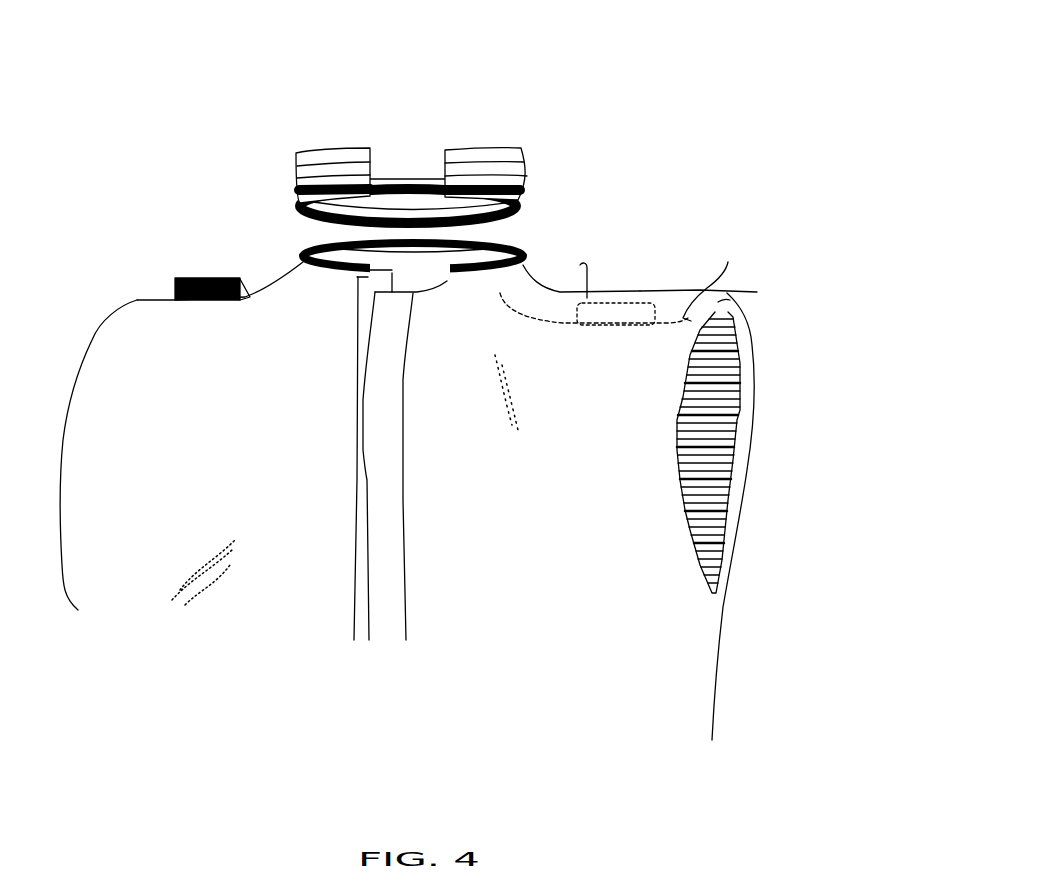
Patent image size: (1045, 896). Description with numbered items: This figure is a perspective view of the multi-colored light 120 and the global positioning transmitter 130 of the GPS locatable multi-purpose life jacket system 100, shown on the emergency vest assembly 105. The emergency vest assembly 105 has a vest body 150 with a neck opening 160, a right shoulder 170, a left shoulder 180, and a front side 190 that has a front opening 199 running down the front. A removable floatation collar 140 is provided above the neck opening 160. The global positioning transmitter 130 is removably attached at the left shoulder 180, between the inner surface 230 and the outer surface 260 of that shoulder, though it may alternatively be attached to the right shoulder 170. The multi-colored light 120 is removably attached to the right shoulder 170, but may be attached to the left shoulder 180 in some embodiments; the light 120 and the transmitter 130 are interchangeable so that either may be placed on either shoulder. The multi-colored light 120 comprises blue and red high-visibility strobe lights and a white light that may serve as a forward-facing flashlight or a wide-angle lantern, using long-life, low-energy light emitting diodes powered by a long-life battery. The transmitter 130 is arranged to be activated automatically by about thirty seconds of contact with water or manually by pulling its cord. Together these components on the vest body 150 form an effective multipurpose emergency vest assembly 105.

The GPS locatable multi-purpose life jacket system 100 is at (622, 47).
The emergency vest assembly 105 is at (672, 92).
The removable floatation collar 140 is at (522, 160).
The neck opening 160 is at (412, 263).
The multi-colored light 120 is at (217, 278).
The right shoulder 170 is at (137, 300).
The front opening 199 is at (357, 482).
The vest body 150 is at (533, 492).
The front side 190 is at (533, 537).
The global positioning transmitter 130 is at (620, 316).
The outer surface 260 is at (613, 290).
The inner surface 230 is at (717, 282).
The left shoulder 180 is at (757, 292).